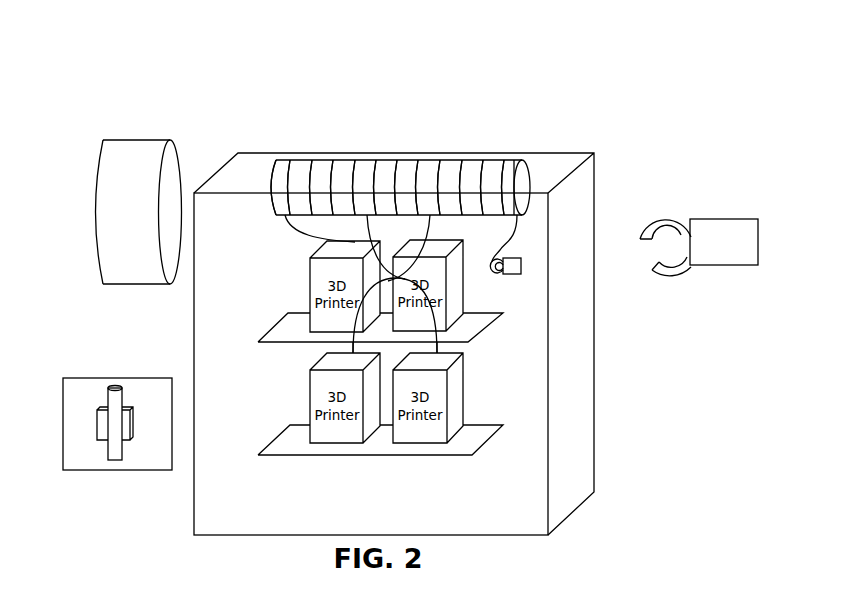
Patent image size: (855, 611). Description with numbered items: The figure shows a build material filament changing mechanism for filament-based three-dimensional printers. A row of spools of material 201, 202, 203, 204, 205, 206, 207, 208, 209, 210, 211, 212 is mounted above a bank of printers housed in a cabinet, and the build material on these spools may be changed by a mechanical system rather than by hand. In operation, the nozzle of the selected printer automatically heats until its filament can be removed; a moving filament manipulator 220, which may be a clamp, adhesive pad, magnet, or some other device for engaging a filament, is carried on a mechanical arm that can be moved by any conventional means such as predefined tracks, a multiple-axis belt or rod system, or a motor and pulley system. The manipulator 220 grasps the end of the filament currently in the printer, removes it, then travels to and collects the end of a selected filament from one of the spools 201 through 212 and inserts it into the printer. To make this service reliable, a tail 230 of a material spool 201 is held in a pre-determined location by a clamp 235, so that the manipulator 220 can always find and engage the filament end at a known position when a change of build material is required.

The spool of material 201 is at (150, 150).
The spool of material 202 is at (302, 172).
The spool of material 203 is at (327, 172).
The spool of material 204 is at (352, 172).
The spool of material 205 is at (361, 172).
The spool of material 206 is at (385, 172).
The spool of material 207 is at (413, 172).
The spool of material 208 is at (433, 172).
The spool of material 209 is at (453, 172).
The spool of material 210 is at (475, 172).
The spool of material 211 is at (495, 172).
The spool of material 212 is at (517, 172).
The moving filament manipulator 220 is at (523, 262).
The tail 230 is at (116, 452).
The clamp 235 is at (97, 424).